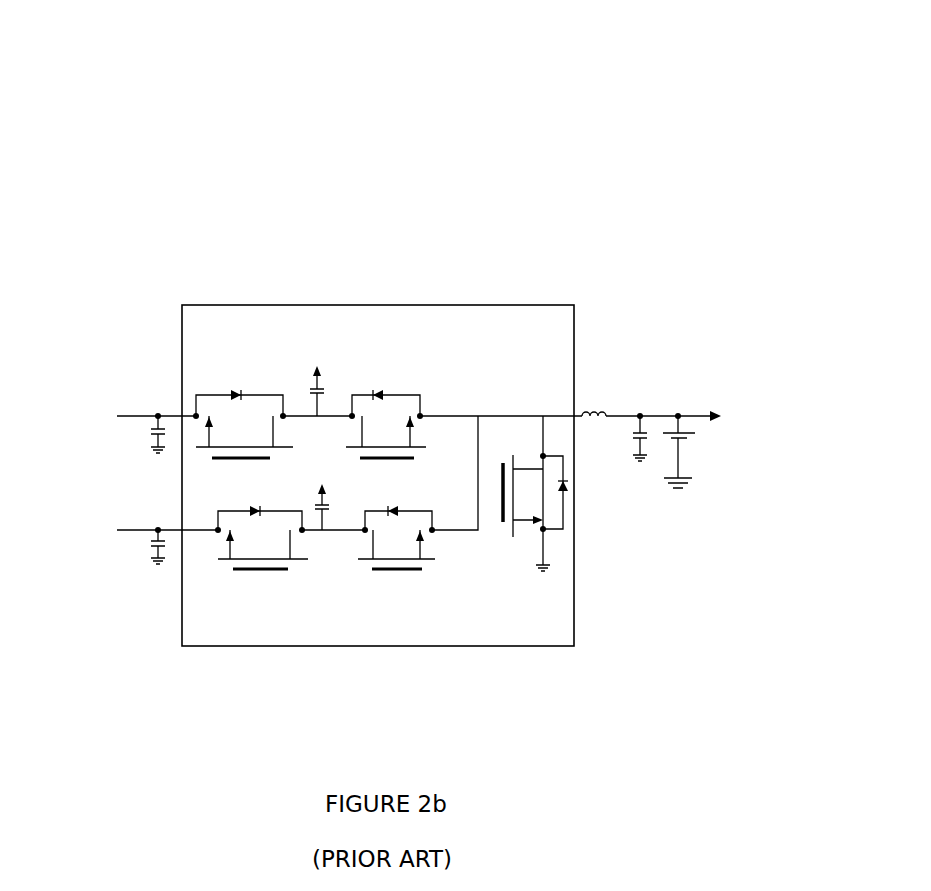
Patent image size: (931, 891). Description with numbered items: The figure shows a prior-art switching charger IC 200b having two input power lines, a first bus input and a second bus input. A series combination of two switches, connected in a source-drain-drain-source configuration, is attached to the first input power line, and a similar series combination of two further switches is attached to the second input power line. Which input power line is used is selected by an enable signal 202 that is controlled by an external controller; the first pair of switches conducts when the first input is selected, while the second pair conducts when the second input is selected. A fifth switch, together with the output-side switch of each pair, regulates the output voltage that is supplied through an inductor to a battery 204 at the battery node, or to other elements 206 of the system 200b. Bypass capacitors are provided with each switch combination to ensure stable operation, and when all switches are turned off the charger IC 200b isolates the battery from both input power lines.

The charger IC 200b is at (356, 150).
The enable signal 202 is at (170, 614).
The battery 204 is at (698, 437).
The elements of the system 206 is at (686, 432).